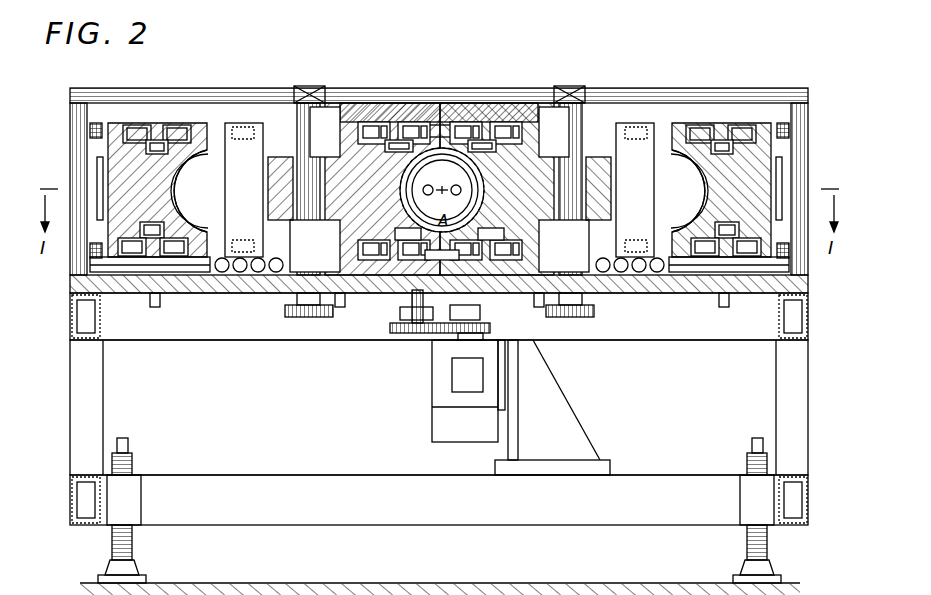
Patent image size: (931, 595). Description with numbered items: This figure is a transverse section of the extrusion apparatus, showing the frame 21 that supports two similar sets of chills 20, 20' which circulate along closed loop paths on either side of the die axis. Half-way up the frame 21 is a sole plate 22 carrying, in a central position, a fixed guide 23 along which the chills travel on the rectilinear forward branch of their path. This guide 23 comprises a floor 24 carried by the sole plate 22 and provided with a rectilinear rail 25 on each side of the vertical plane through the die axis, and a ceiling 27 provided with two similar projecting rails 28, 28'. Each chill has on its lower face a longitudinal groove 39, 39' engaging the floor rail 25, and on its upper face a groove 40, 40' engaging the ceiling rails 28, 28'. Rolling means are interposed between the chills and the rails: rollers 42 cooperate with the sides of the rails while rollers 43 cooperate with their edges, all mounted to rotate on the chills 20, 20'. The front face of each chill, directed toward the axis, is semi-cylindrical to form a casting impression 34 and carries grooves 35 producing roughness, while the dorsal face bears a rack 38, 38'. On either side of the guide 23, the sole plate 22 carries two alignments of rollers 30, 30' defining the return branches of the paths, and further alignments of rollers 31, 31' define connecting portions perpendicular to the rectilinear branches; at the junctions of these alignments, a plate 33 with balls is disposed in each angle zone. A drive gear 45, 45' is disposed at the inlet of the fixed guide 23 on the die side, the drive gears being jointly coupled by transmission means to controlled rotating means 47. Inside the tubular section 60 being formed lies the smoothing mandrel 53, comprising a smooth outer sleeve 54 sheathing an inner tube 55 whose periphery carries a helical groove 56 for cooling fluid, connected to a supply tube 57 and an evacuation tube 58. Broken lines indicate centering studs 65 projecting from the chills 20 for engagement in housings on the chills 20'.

The chill 20 is at (174, 141).
The chill 20' is at (707, 142).
The frame 21 is at (798, 88).
The sole plate 22 is at (192, 290).
The guide 23 is at (337, 108).
The floor 24 is at (548, 236).
The rail 25 is at (365, 240).
The ceiling 27 is at (548, 116).
The rail 28 is at (400, 109).
The rail 28' is at (489, 109).
The alignment of rollers 30 is at (150, 283).
The alignment of rollers 30' is at (729, 283).
The alignment of rollers 31 is at (249, 284).
The alignment of rollers 31' is at (630, 284).
The plate with balls 33 is at (100, 246).
The casting impression 34 is at (176, 190).
The grooves 35 is at (170, 170).
The rack 38 is at (196, 191).
The rack 38' is at (684, 191).
The groove 39 is at (241, 287).
The groove 39' is at (636, 287).
The groove 40 is at (256, 103).
The groove 40' is at (623, 104).
The rollers 42 is at (392, 122).
The rollers 43 is at (154, 208).
The drive gear 45 is at (264, 188).
The drive gear 45' is at (616, 188).
The controlled rotating means 47 is at (418, 420).
The smoothing mandrel 53 is at (425, 196).
The smooth outer sleeve 54 is at (460, 196).
The inner tube 55 is at (449, 244).
The helical groove 56 is at (446, 162).
The tube 57 is at (400, 150).
The tube 58 is at (480, 150).
The tubular section 60 is at (448, 125).
The centering studs 65 is at (439, 189).